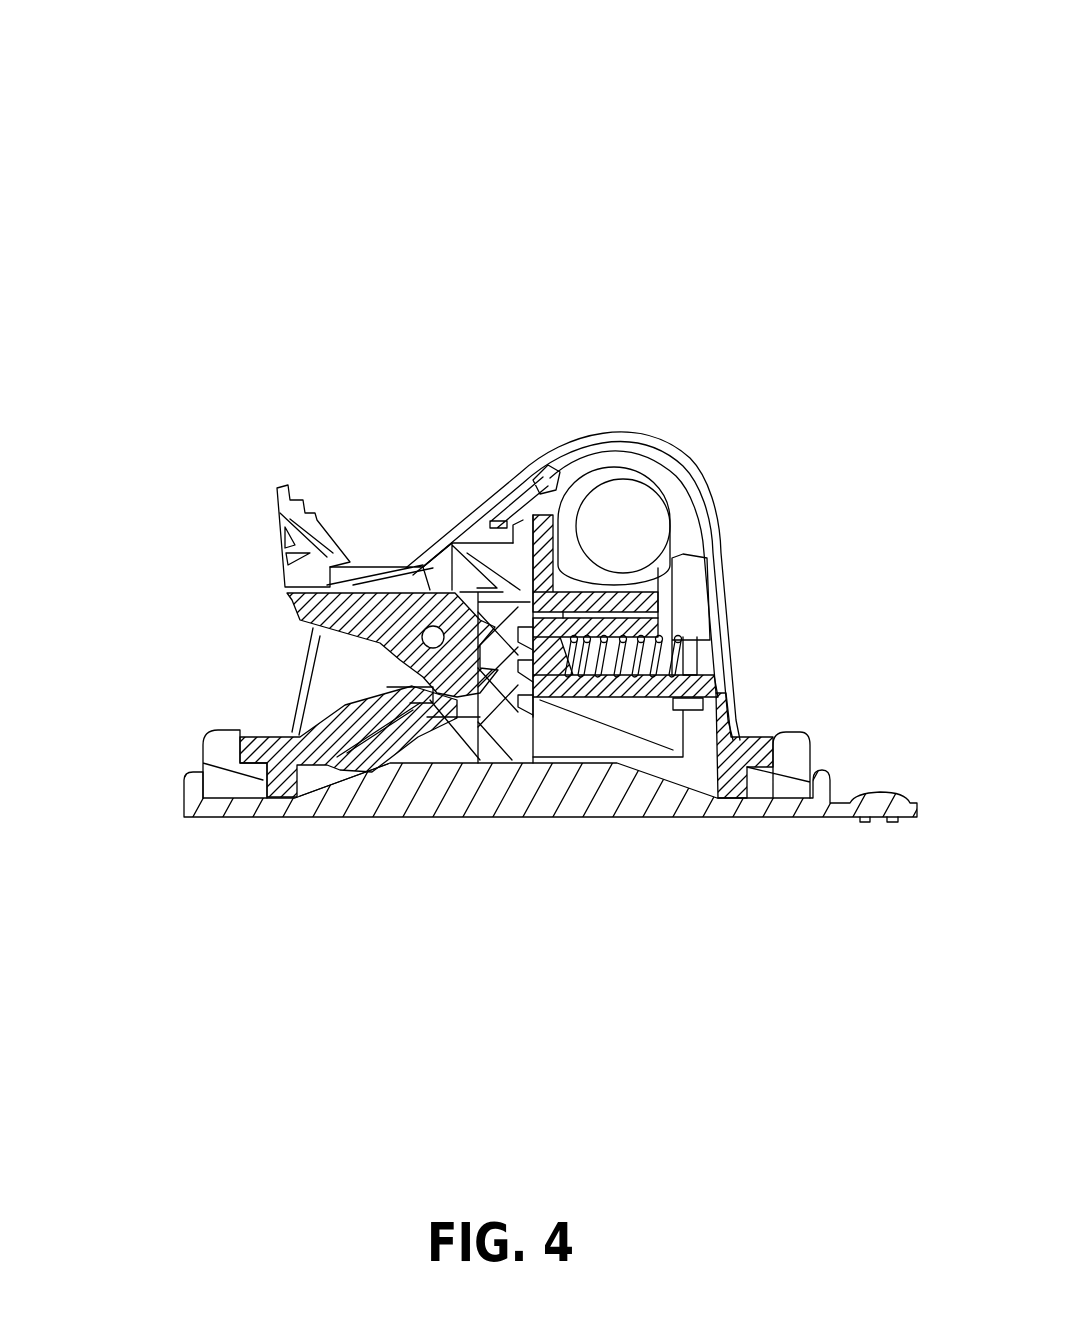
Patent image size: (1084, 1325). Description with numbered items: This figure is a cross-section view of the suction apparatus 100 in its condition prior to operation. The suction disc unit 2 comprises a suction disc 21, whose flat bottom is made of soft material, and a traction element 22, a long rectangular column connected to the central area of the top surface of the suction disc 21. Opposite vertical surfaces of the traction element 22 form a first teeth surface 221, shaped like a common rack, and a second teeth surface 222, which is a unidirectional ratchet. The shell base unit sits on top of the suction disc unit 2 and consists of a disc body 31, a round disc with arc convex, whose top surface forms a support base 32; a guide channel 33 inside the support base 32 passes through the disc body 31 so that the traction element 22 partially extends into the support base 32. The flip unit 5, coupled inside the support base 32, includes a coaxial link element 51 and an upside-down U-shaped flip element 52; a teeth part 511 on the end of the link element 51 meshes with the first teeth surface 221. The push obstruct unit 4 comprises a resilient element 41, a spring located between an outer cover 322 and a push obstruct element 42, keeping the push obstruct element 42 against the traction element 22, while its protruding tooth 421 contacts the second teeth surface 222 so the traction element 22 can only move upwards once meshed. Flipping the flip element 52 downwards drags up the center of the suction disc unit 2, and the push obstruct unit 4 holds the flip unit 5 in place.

The suction apparatus 100 is at (518, 172).
The suction disc unit 2 is at (568, 779).
The suction disc 21 is at (433, 790).
The traction element 22 is at (520, 725).
The first teeth surface 221 is at (350, 788).
The second teeth surface 222 is at (538, 715).
The disc body 31 is at (278, 740).
The support base 32 is at (608, 522).
The outer cover 322 is at (550, 466).
The guide channel 33 is at (457, 590).
The push obstruct unit 4 is at (729, 558).
The resilient element 41 is at (660, 670).
The push obstruct element 42 is at (673, 605).
The protruding tooth 421 is at (600, 550).
The flip unit 5 is at (542, 555).
The link element 51 is at (390, 590).
The teeth part 511 is at (450, 545).
The flip element 52 is at (360, 566).